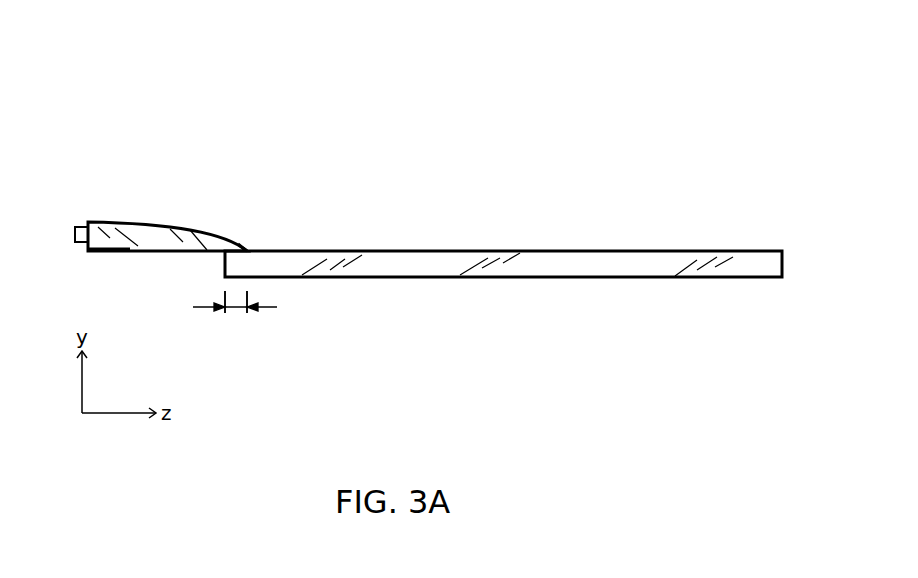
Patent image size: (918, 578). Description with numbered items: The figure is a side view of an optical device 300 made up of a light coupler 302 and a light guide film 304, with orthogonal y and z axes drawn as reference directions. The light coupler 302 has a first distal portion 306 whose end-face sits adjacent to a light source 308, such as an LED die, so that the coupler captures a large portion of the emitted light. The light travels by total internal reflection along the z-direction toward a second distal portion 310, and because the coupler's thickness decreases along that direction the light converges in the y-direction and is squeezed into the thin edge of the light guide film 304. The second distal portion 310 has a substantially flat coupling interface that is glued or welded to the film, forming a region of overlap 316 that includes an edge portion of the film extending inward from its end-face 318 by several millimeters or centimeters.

The optical device 300 is at (643, 131).
The light coupler 302 is at (165, 221).
The light guide film 304 is at (530, 252).
The first distal portion 306 is at (86, 251).
The light source 308 is at (83, 225).
The second distal portion 310 is at (248, 249).
The region of overlap 316 is at (237, 311).
The end-face 318 is at (220, 263).